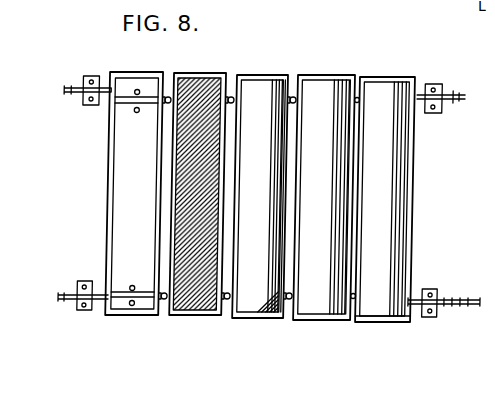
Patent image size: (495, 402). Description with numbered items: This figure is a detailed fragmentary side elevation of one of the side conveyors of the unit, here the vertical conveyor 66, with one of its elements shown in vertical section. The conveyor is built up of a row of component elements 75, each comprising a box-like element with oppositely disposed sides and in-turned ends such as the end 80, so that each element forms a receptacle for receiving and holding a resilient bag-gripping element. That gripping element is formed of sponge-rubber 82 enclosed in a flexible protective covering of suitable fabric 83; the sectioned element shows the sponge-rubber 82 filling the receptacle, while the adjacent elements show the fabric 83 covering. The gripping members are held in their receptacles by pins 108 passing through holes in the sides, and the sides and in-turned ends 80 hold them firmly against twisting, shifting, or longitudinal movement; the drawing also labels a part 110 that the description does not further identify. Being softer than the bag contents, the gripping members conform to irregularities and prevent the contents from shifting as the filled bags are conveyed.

The second vertical conveyor 66 is at (80, 86).
The component element 75 is at (110, 215).
The in-turned end 80 is at (370, 323).
The sponge-rubber 82 is at (228, 76).
The fabric 83 is at (268, 283).
The pins 108 is at (135, 101).
The inner frame of panel 110 is at (152, 231).